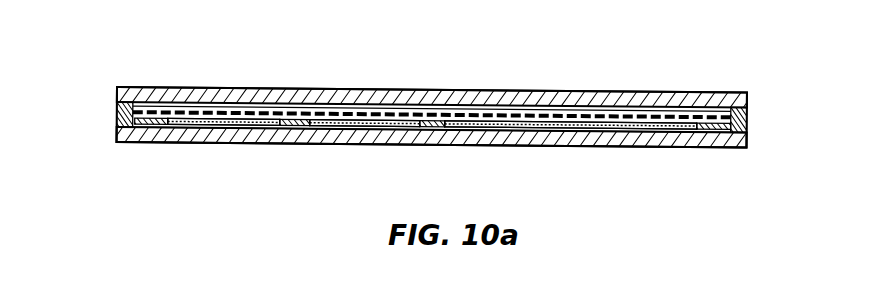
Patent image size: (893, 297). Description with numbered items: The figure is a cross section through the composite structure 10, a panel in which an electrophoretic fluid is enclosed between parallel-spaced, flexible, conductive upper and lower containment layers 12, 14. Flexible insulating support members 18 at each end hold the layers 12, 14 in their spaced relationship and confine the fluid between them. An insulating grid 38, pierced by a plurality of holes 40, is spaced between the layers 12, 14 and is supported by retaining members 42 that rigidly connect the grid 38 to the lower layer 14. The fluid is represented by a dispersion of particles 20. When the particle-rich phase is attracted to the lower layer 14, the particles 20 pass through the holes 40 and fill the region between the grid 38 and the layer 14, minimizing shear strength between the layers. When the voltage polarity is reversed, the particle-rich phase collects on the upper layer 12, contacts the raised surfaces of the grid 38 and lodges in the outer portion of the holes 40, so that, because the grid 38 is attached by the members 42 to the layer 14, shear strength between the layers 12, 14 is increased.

The composite structure 10 is at (512, 77).
The upper containment layer 12 is at (382, 89).
The lower containment layer 14 is at (247, 145).
The support member 18 is at (117, 118).
The particles 20 is at (204, 124).
The insulating grid 38 is at (220, 118).
The holes 40 is at (192, 110).
The retaining members 42 is at (157, 124).